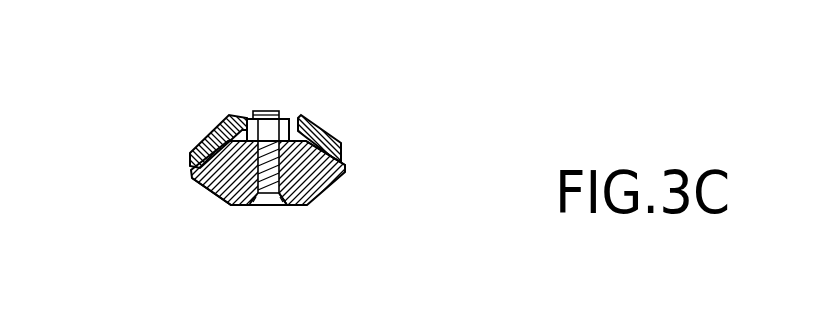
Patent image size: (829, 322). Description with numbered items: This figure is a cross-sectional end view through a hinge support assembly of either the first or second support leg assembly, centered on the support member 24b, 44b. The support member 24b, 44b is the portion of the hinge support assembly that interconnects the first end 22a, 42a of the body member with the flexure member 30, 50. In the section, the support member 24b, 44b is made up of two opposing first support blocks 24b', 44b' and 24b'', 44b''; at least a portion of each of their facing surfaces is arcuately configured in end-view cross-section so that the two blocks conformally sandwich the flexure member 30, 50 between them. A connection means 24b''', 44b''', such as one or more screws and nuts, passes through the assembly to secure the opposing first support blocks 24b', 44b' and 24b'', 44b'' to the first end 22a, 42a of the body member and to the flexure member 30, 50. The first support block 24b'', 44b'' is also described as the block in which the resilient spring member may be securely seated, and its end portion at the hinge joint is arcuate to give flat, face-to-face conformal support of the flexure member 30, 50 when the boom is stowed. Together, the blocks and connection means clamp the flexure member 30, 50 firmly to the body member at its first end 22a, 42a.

The support member 24b is at (253, 139).
The support member 44b is at (253, 139).
The first support block 24b' is at (283, 108).
The first support block 44b' is at (283, 108).
The first support block 24b'' is at (251, 230).
The first support block 44b'' is at (251, 230).
The connection means 24b''' is at (385, 202).
The connection means 44b''' is at (385, 202).
The flexure member 30 is at (283, 135).
The flexure member 50 is at (298, 122).
The first end of body member 22a is at (383, 139).
The first end of body member 42a is at (325, 160).